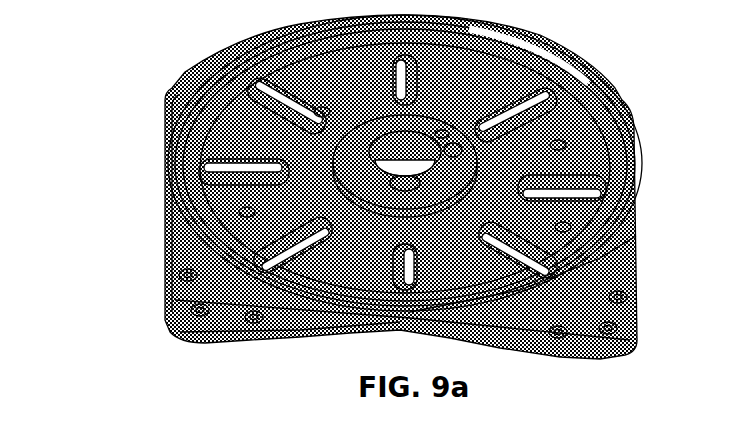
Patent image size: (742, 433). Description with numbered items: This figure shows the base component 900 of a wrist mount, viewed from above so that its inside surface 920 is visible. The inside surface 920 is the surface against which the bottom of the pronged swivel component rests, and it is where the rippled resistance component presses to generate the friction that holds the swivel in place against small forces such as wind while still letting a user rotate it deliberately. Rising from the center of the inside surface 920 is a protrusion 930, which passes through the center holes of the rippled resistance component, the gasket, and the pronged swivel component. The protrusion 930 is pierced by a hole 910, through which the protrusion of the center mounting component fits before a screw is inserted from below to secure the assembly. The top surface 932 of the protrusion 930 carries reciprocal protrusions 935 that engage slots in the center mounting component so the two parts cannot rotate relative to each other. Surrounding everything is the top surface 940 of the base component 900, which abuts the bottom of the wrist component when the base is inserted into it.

The base component 900 is at (305, 342).
The hole 910 is at (407, 152).
The inside surface 920 is at (238, 128).
The protrusion 930 is at (472, 181).
The top surface 932 is at (445, 130).
The reciprocal protrusions 935 is at (467, 147).
The top surface 940 is at (590, 307).